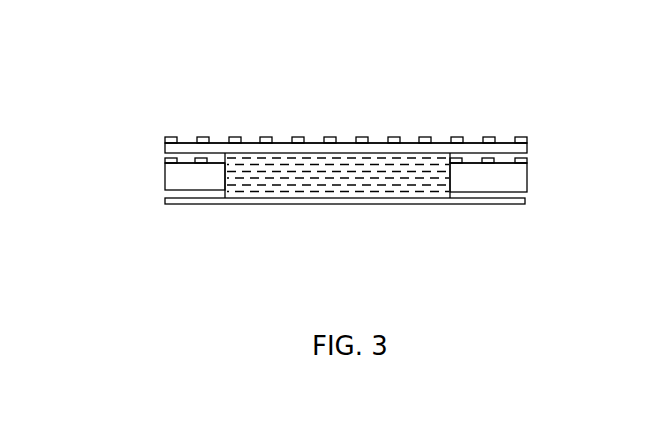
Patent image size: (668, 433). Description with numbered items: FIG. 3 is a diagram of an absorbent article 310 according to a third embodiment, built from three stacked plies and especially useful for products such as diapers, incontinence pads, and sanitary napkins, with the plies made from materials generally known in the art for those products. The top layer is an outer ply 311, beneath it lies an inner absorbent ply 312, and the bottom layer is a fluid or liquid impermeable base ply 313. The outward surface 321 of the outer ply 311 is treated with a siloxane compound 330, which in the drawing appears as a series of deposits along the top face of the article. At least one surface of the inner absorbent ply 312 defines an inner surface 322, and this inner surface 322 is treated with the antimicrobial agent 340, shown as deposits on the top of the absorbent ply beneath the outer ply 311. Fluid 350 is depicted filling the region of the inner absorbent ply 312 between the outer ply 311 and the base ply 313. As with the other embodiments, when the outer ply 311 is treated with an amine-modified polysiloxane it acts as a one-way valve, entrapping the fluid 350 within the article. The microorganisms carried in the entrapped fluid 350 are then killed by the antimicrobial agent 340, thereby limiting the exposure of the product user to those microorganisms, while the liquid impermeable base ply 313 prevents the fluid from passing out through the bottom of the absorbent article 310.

The absorbent article 310 is at (478, 70).
The outer ply 311 is at (527, 147).
The inner absorbent ply 312 is at (527, 180).
The liquid impermeable base ply 313 is at (525, 203).
The outward surface 321 is at (472, 143).
The inner surface 322 is at (505, 163).
The siloxane compound 330 is at (298, 137).
The antimicrobial agent 340 is at (203, 158).
The fluid 350 is at (298, 177).